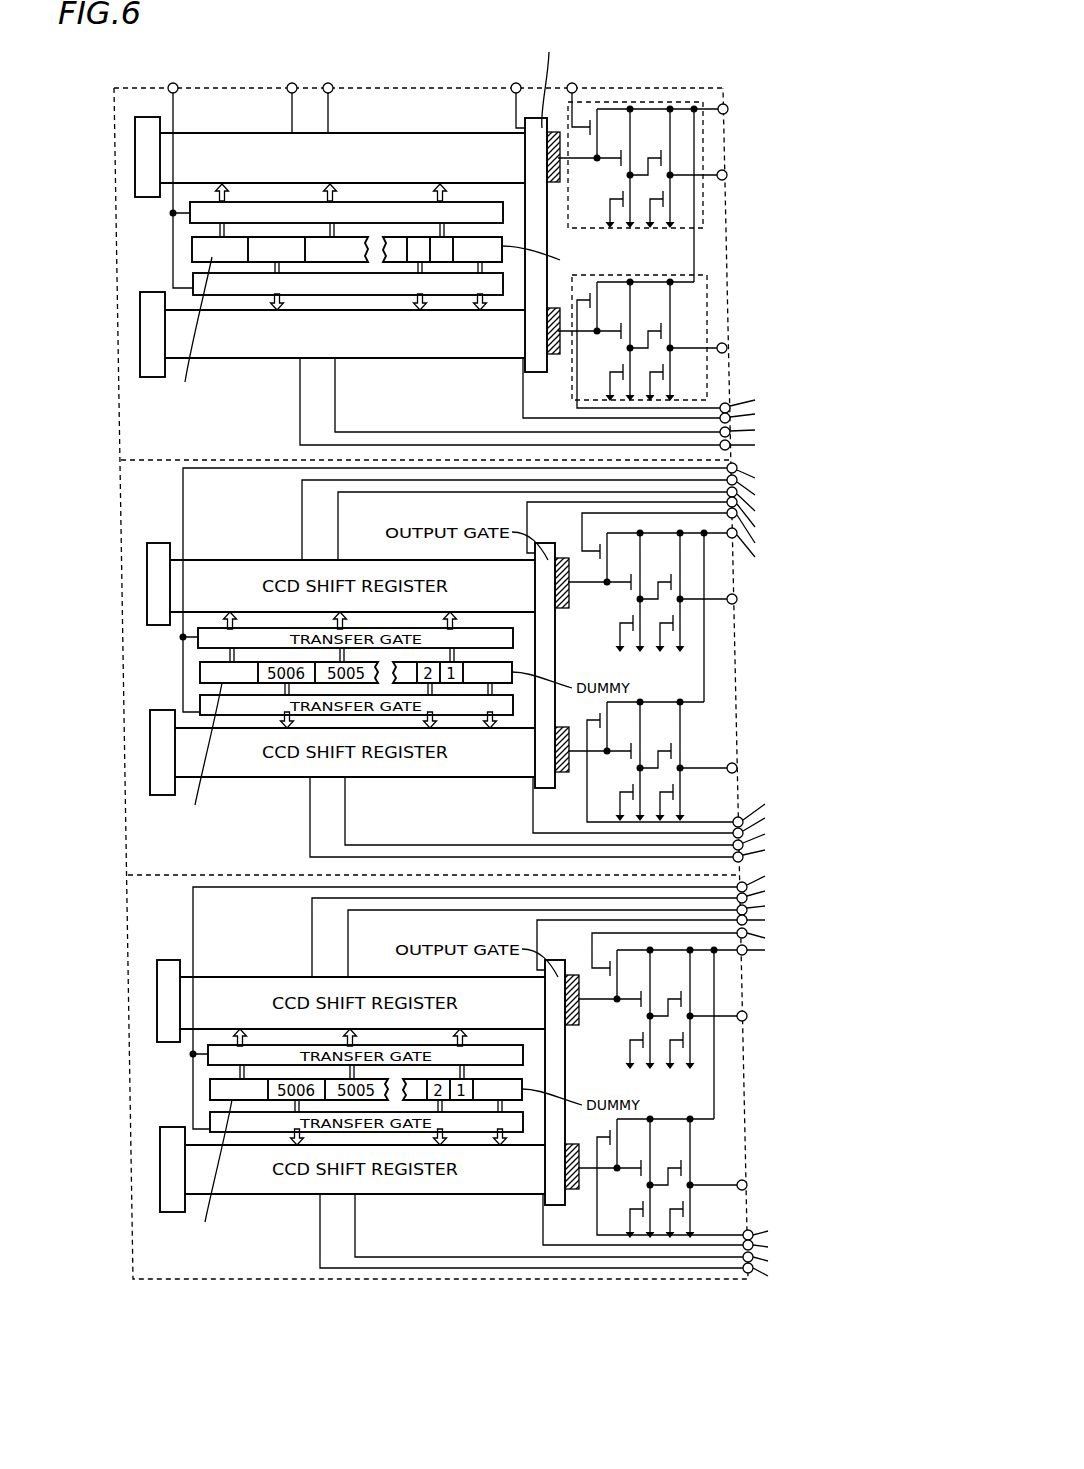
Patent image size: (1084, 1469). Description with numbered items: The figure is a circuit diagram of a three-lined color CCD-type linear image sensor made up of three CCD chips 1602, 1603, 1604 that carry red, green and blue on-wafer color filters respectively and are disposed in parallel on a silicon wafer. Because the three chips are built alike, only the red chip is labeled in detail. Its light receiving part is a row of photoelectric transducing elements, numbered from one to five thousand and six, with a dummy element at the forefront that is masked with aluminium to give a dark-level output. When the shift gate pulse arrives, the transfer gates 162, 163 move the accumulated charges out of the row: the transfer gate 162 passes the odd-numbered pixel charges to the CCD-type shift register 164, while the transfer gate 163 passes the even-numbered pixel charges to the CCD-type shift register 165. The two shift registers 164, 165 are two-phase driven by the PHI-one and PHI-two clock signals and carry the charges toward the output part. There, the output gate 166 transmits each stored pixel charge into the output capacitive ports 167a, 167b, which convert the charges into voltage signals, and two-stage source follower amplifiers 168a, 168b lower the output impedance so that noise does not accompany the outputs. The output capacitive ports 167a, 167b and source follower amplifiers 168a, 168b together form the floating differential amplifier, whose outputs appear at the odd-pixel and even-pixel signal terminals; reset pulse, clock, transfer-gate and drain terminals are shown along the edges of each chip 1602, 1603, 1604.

The transfer gate 162 is at (190, 221).
The transfer gate 163 is at (193, 283).
The CCD-type shift register 164 is at (465, 133).
The CCD-type shift register 165 is at (470, 358).
The output gate 166 is at (544, 373).
The output capacitive port 167a is at (553, 185).
The output capacitive port 167b is at (560, 358).
The source follower amplifier 168a is at (648, 106).
The source follower amplifier 168b is at (638, 273).
The CCD chip 1602 is at (464, 245).
The CCD chip 1603 is at (486, 666).
The CCD chip 1604 is at (493, 1076).